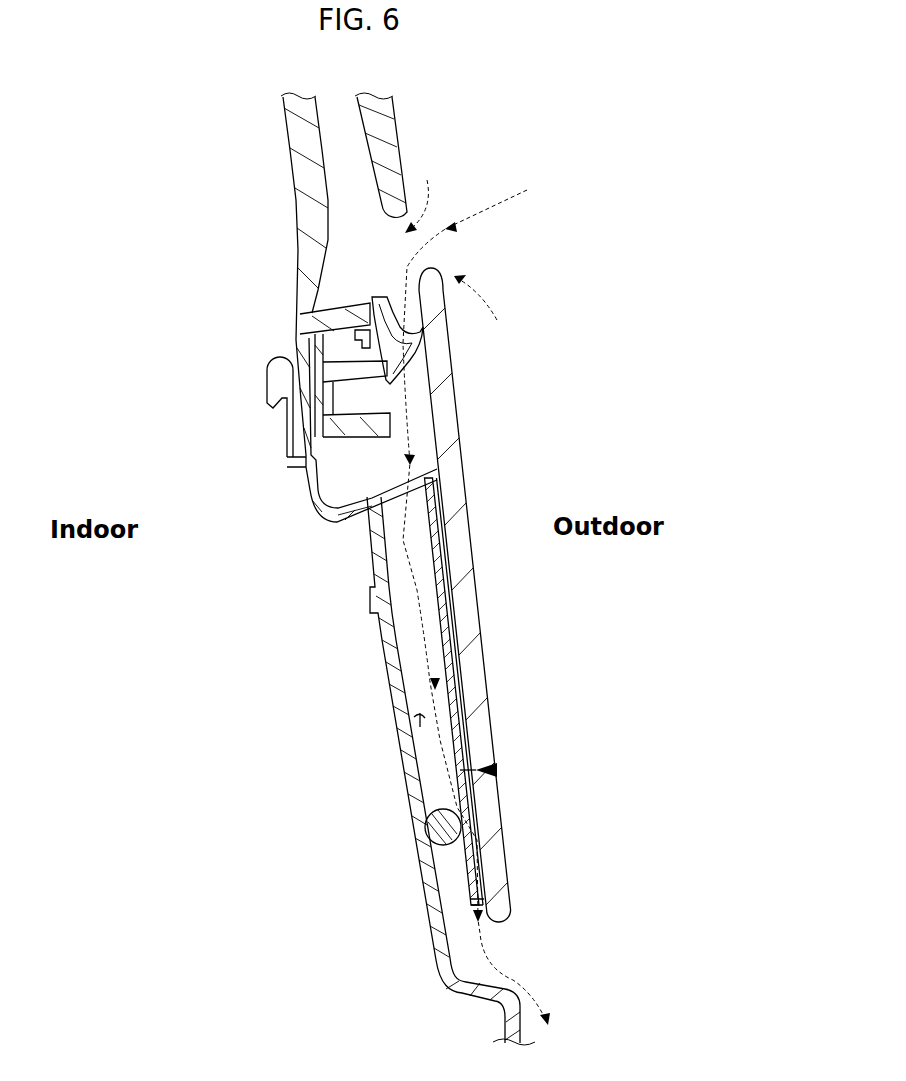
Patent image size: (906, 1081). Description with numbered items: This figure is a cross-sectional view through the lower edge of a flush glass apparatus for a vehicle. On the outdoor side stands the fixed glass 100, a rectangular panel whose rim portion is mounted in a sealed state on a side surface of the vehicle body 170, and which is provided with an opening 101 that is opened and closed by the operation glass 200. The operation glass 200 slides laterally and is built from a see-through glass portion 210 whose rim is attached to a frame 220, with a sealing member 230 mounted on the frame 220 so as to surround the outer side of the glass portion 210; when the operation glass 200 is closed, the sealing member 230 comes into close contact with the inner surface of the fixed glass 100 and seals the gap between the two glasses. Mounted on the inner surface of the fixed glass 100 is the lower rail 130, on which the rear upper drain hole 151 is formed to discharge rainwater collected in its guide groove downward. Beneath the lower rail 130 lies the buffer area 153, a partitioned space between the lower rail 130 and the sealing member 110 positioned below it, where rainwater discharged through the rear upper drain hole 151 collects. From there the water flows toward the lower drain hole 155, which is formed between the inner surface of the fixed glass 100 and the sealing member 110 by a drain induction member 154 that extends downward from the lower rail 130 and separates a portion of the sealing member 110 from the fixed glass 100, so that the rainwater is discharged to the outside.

The fixed glass 100 is at (471, 636).
The opening 101 is at (430, 270).
The sealing member 110 is at (438, 826).
The lower rail 130 is at (310, 491).
The rear upper drain hole 151 is at (447, 596).
The buffer area 153 is at (415, 718).
The drain induction member 154 is at (497, 770).
The lower drain hole 155 is at (485, 886).
The vehicle body 170 is at (410, 801).
The operation glass 200 is at (258, 188).
The glass portion 210 is at (386, 135).
The frame 220 is at (304, 258).
The sealing member 230 is at (345, 338).